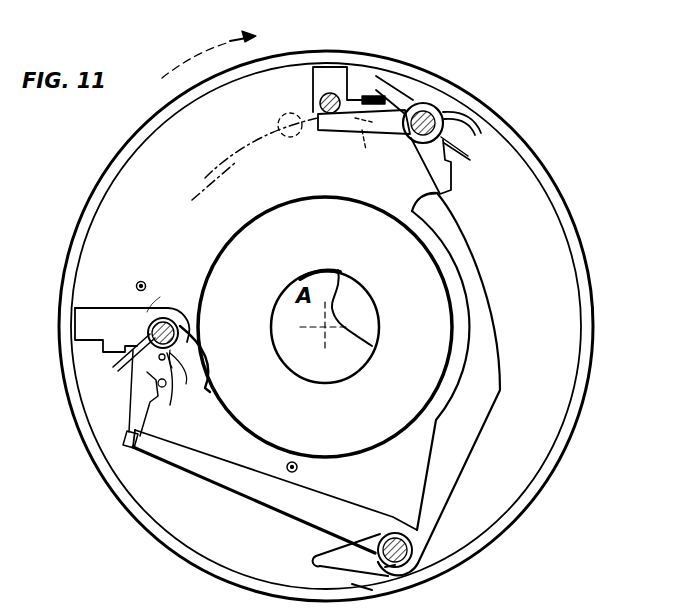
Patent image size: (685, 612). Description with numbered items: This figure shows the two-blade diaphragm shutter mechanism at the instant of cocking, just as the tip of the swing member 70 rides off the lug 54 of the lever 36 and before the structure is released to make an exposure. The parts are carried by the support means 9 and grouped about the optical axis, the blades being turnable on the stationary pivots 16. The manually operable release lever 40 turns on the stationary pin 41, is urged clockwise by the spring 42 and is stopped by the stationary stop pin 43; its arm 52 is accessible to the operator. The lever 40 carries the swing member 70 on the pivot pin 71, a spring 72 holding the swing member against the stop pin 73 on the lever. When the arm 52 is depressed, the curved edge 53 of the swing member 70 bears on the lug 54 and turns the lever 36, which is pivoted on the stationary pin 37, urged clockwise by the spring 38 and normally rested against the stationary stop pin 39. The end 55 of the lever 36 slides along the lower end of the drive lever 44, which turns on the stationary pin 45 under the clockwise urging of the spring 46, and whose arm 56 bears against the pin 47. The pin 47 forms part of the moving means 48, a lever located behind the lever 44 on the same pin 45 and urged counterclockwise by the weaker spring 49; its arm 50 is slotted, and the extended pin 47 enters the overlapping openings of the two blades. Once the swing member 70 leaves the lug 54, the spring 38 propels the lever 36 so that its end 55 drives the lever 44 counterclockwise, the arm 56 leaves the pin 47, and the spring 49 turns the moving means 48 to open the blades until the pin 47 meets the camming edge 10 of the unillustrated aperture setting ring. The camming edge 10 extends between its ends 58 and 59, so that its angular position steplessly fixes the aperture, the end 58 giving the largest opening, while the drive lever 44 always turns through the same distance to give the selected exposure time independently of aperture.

The support means 9 is at (549, 203).
The camming edge 10 is at (247, 165).
The stationary pivots 16 is at (366, 136).
The lever 36 is at (496, 374).
The stationary pin 37 is at (412, 547).
The spring 38 is at (368, 574).
The stationary stop pin 39 is at (298, 469).
The release lever 40 is at (166, 294).
The stationary pin 41 is at (185, 326).
The spring 42 is at (113, 366).
The stationary stop pin 43 is at (143, 280).
The drive lever 44 is at (432, 177).
The stationary pin 45 is at (433, 108).
The spring 46 is at (466, 153).
The pin 47 is at (322, 102).
The moving means 48 is at (313, 82).
The spring 49 is at (419, 78).
The arm 50 is at (352, 609).
The arm 52 is at (75, 323).
The curved edge 53 is at (148, 400).
The lug 54 is at (131, 449).
The end 55 is at (425, 201).
The arm 56 is at (343, 134).
The end 58 is at (192, 200).
The end 59 is at (330, 93).
The swing member 70 is at (129, 420).
The pivot pin 71 is at (172, 406).
The spring 72 is at (183, 357).
The stop pin 73 is at (186, 379).